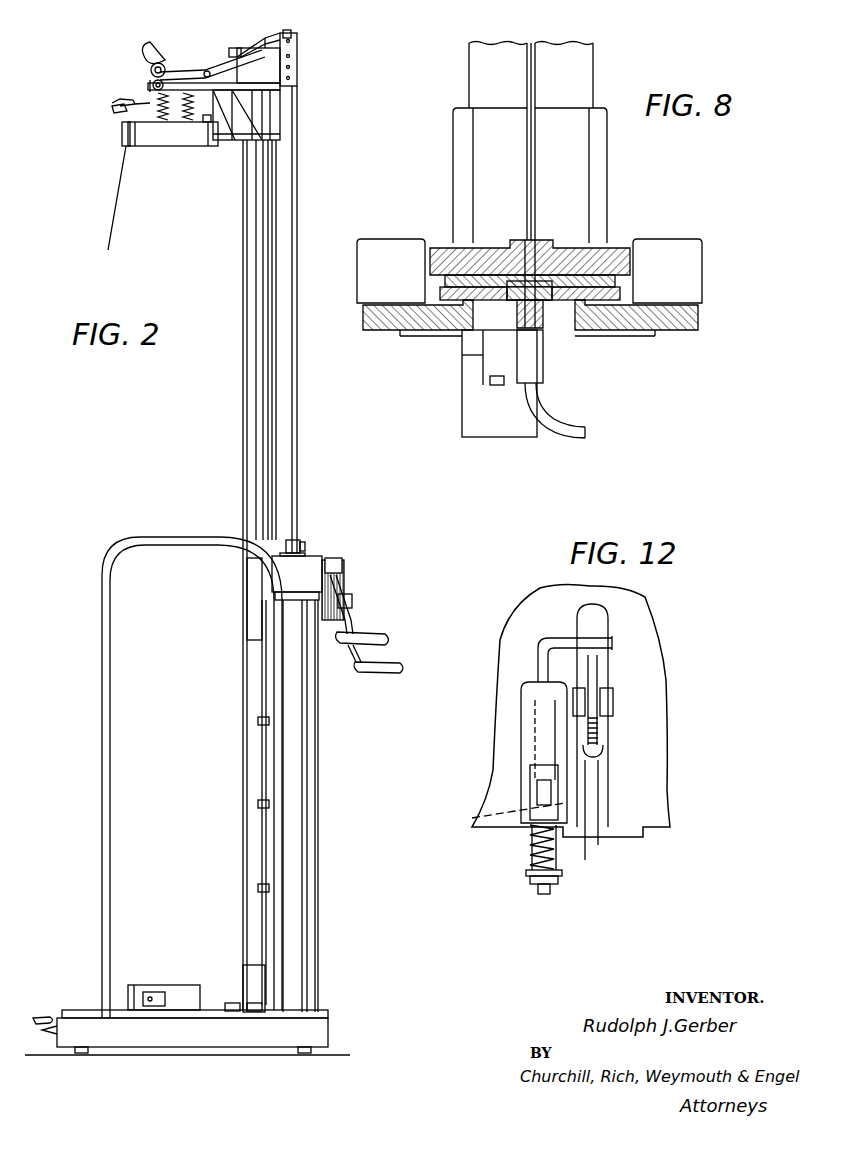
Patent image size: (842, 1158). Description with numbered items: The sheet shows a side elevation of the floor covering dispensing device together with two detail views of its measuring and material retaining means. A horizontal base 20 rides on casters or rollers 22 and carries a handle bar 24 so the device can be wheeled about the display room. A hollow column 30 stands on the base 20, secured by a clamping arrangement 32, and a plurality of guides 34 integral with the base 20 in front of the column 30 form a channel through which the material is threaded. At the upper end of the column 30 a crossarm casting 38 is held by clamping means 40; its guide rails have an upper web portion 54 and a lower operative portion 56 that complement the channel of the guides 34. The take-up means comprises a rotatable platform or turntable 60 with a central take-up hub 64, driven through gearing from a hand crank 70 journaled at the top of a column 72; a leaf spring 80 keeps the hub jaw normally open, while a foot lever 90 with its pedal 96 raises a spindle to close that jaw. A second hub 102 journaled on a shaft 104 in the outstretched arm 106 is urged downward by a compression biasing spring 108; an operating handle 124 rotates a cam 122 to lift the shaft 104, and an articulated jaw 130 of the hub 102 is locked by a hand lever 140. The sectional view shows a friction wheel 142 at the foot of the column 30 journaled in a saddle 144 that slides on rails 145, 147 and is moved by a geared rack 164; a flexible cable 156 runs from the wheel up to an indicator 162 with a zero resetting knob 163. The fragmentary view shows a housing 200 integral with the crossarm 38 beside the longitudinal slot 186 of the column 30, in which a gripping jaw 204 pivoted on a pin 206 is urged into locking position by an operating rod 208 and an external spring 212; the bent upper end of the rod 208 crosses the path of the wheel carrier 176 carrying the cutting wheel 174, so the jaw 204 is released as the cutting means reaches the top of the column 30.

In FIG. 2, the base 20 is at (165, 1040).
In FIG. 8, the base 20 is at (370, 318).
In FIG. 2, the casters or rollers 22 is at (76, 1054).
In FIG. 2, the handle bar 24 is at (106, 646).
In FIG. 2, the hollow column 30 is at (243, 350).
In FIG. 8, the hollow column 30 is at (595, 72).
In FIG. 2, the clamping arrangement 32 is at (246, 968).
In FIG. 2, the guides 34 is at (235, 1003).
In FIG. 8, the guides 34 is at (376, 255).
In FIG. 2, the crossarm casting 38 is at (209, 128).
In FIG. 2, the clamping means 40 is at (300, 75).
In FIG. 2, the upper web portion 54 is at (246, 104).
In FIG. 2, the lower operative portion 56 is at (258, 136).
In FIG. 2, the platform or turntable 60 is at (78, 1010).
In FIG. 2, the take-up hub 64 is at (128, 990).
In FIG. 2, the hand crank 70 is at (360, 634).
In FIG. 2, the column 72 is at (300, 832).
In FIG. 2, the leaf spring 80 is at (157, 997).
In FIG. 2, the foot lever 90 is at (57, 1030).
In FIG. 2, the pedal 96 is at (38, 1017).
In FIG. 2, the second hub 102 is at (167, 136).
In FIG. 2, the shaft 104 is at (142, 102).
In FIG. 2, the outstretched arm 106 is at (228, 70).
In FIG. 2, the compression biasing spring 108 is at (152, 80).
In FIG. 2, the cam 122 is at (150, 58).
In FIG. 2, the operating handle 124 is at (165, 68).
In FIG. 2, the articulated jaw 130 is at (124, 135).
In FIG. 2, the hand lever 140 is at (115, 112).
In FIG. 8, the friction wheel 142 is at (618, 247).
In FIG. 2, the saddle 144 is at (205, 135).
In FIG. 8, the saddle 144 is at (562, 305).
In FIG. 8, the rail 145 is at (442, 248).
In FIG. 8, the rail 147 is at (612, 291).
In FIG. 2, the flexible cable 156 is at (262, 752).
In FIG. 8, the flexible cable 156 is at (580, 433).
In FIG. 2, the indicator 162 is at (302, 542).
In FIG. 2, the zero resetting knob 163 is at (306, 548).
In FIG. 8, the geared rack 164 is at (490, 390).
In FIG. 12, the cutting wheel 174 is at (583, 765).
In FIG. 12, the wheel carrier 176 is at (600, 665).
In FIG. 2, the longitudinal slot 186 is at (273, 456).
In FIG. 8, the longitudinal slot 186 is at (533, 43).
In FIG. 12, the longitudinal slot 186 is at (594, 840).
In FIG. 12, the housing 200 is at (520, 742).
In FIG. 12, the gripping jaw 204 is at (533, 797).
In FIG. 12, the pin 206 is at (468, 819).
In FIG. 12, the operating rod 208 is at (540, 652).
In FIG. 12, the external spring 212 is at (508, 842).